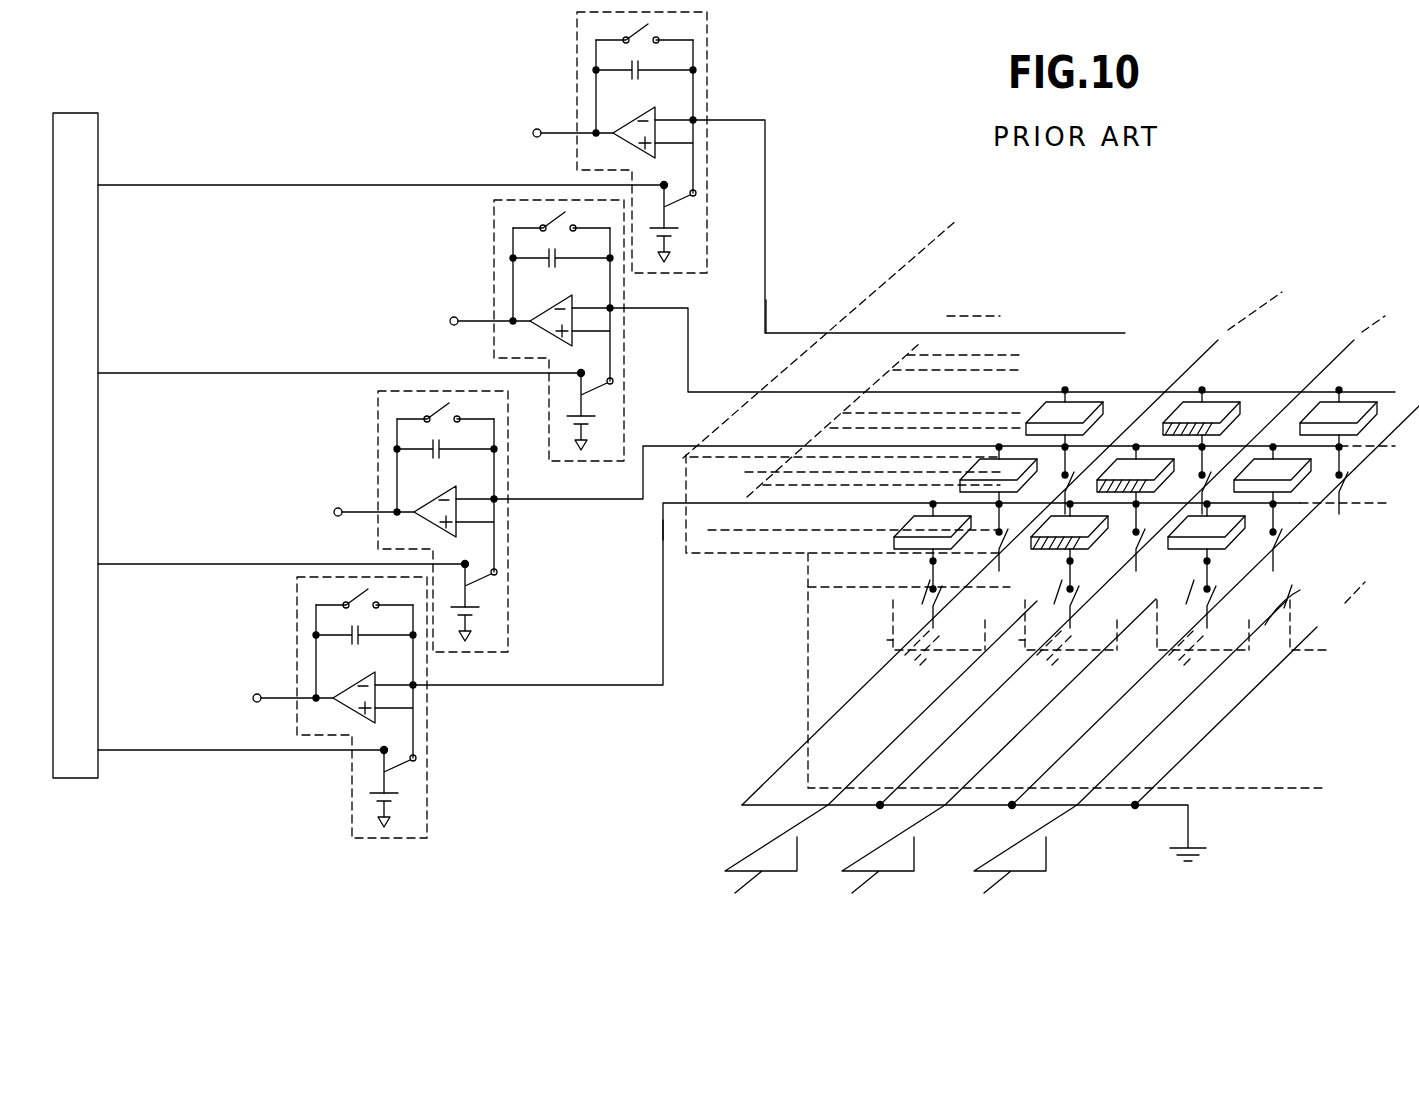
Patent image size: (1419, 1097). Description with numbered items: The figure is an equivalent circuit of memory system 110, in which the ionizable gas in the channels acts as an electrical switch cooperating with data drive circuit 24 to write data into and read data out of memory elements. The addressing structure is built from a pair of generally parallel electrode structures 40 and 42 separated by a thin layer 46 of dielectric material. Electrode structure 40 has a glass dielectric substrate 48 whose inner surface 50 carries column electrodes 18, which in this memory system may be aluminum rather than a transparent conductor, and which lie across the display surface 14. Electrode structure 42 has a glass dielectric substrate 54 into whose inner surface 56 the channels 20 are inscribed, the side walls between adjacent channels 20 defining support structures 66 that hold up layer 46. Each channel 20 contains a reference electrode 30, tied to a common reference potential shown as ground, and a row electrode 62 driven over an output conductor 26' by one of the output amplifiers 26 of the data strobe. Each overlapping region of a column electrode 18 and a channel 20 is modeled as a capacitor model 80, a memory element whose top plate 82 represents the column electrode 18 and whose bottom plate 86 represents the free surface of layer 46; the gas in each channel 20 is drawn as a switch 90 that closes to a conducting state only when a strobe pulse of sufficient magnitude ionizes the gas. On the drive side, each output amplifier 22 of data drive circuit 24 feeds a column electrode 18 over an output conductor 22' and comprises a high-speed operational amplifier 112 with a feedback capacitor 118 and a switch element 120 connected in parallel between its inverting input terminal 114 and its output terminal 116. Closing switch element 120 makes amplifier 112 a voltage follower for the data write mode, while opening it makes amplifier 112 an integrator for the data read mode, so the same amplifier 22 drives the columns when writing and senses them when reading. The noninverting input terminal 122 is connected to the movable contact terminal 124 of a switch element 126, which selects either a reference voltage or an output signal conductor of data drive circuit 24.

The display surface 14 is at (861, 299).
The column electrodes 18 is at (943, 315).
The channels 20 is at (925, 660).
The output amplifiers 22 is at (467, 425).
The output conductors 22' is at (684, 425).
The data drive circuit 24 is at (99, 149).
The output amplifiers 26 is at (905, 855).
The output conductors 26' is at (1080, 577).
The reference electrode 30 is at (890, 648).
The electrode structure 40 is at (690, 548).
The electrode structure 42 is at (806, 681).
The layer of dielectric material 46 is at (806, 584).
The glass dielectric substrate 48 is at (684, 490).
The inner surface 50 is at (703, 578).
The glass dielectric substrate 54 is at (806, 710).
The inner surface 56 is at (1300, 580).
The row electrodes 62 is at (1054, 668).
The support structures 66 is at (940, 616).
The capacitor model 80 is at (1036, 412).
The top plate 82 is at (1058, 396).
The bottom plate 86 is at (1095, 416).
The electrical switch 90 is at (1058, 478).
The memory system 110 is at (656, 824).
The operational amplifier 112 is at (630, 144).
The inverting input terminal 114 is at (674, 117).
The output terminal 116 is at (533, 130).
The feedback capacitor 118 is at (644, 68).
The switch element 120 is at (640, 30).
The noninverting input terminal 122 is at (660, 140).
The movable contact terminal 124 is at (677, 191).
The switch element 126 is at (684, 210).